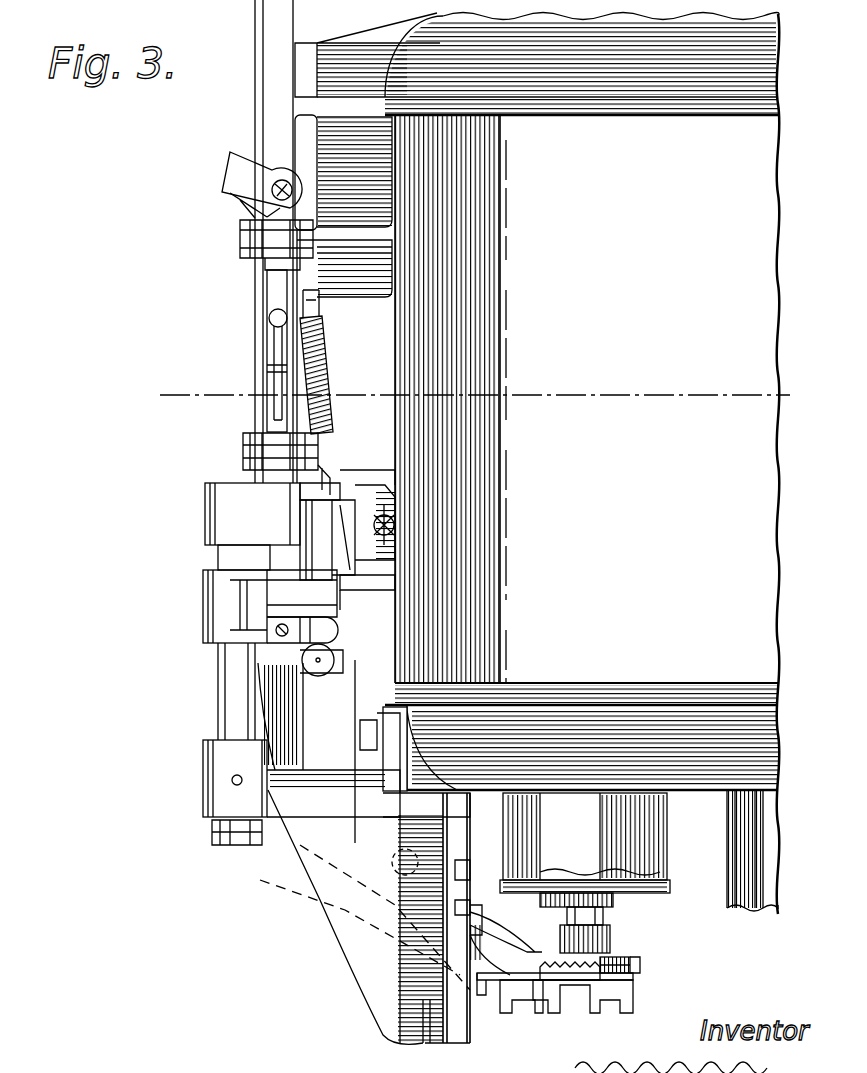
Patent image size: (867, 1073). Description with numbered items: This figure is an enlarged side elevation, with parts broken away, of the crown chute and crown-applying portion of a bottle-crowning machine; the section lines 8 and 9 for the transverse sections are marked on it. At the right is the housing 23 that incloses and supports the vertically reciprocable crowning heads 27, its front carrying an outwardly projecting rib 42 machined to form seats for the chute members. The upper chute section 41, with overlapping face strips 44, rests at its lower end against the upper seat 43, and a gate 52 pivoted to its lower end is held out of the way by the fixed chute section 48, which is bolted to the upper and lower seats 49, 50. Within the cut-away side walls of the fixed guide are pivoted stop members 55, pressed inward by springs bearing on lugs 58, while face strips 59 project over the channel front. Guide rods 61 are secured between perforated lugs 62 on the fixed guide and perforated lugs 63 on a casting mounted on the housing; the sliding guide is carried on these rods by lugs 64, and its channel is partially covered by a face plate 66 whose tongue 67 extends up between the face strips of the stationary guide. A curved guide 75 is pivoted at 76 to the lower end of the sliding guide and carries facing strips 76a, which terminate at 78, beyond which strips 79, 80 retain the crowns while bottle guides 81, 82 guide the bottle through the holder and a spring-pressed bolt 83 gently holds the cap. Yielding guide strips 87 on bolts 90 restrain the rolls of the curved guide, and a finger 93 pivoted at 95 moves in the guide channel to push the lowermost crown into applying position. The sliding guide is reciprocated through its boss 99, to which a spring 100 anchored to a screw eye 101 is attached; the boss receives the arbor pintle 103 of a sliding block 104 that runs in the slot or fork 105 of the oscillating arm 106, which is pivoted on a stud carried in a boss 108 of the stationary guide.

The housing 23 is at (581, 464).
The crowning head 27 is at (585, 873).
The chute section 41 is at (272, 95).
The rib 42 is at (318, 145).
The upper seat 43 is at (309, 45).
The face strips 44 is at (259, 60).
The fixed chute section 48 is at (278, 290).
The upper seat 49 is at (300, 264).
The lower seat 50 is at (300, 455).
The gate 52 is at (235, 172).
The stop members 55 is at (272, 380).
The lugs 58 is at (272, 320).
The face strips 59 is at (243, 262).
The guide rods 61 is at (218, 555).
The perforated lugs 62 is at (225, 522).
The perforated lugs 63 is at (218, 768).
The lugs 64 is at (215, 602).
The face plate 66 is at (212, 643).
The tongue 67 is at (262, 565).
The curved guide 75 is at (300, 875).
The pivot 76 is at (333, 665).
The facing strips 76a is at (338, 902).
The termination of facing strips 78 is at (442, 1043).
The strip 79 is at (515, 993).
The strip 80 is at (640, 998).
The bottle guide 81 is at (556, 1013).
The bottle guide 82 is at (597, 983).
The spring-pressed bolt 83 is at (645, 962).
The yielding guide strip 87 is at (455, 980).
The bolts 90 is at (470, 860).
The finger 93 is at (487, 945).
The pivot 95 is at (375, 929).
The boss 99 is at (310, 530).
The spring 100 is at (312, 375).
The screw eye 101 is at (343, 285).
The arbor pintle 103 is at (392, 530).
The sliding block 104 is at (395, 578).
The slot or fork 105 is at (335, 520).
The oscillating arm 106 is at (305, 520).
The boss 108 is at (352, 590).
The section line 8- 8 is at (797, 400).
The section line 9- 9 is at (690, 948).